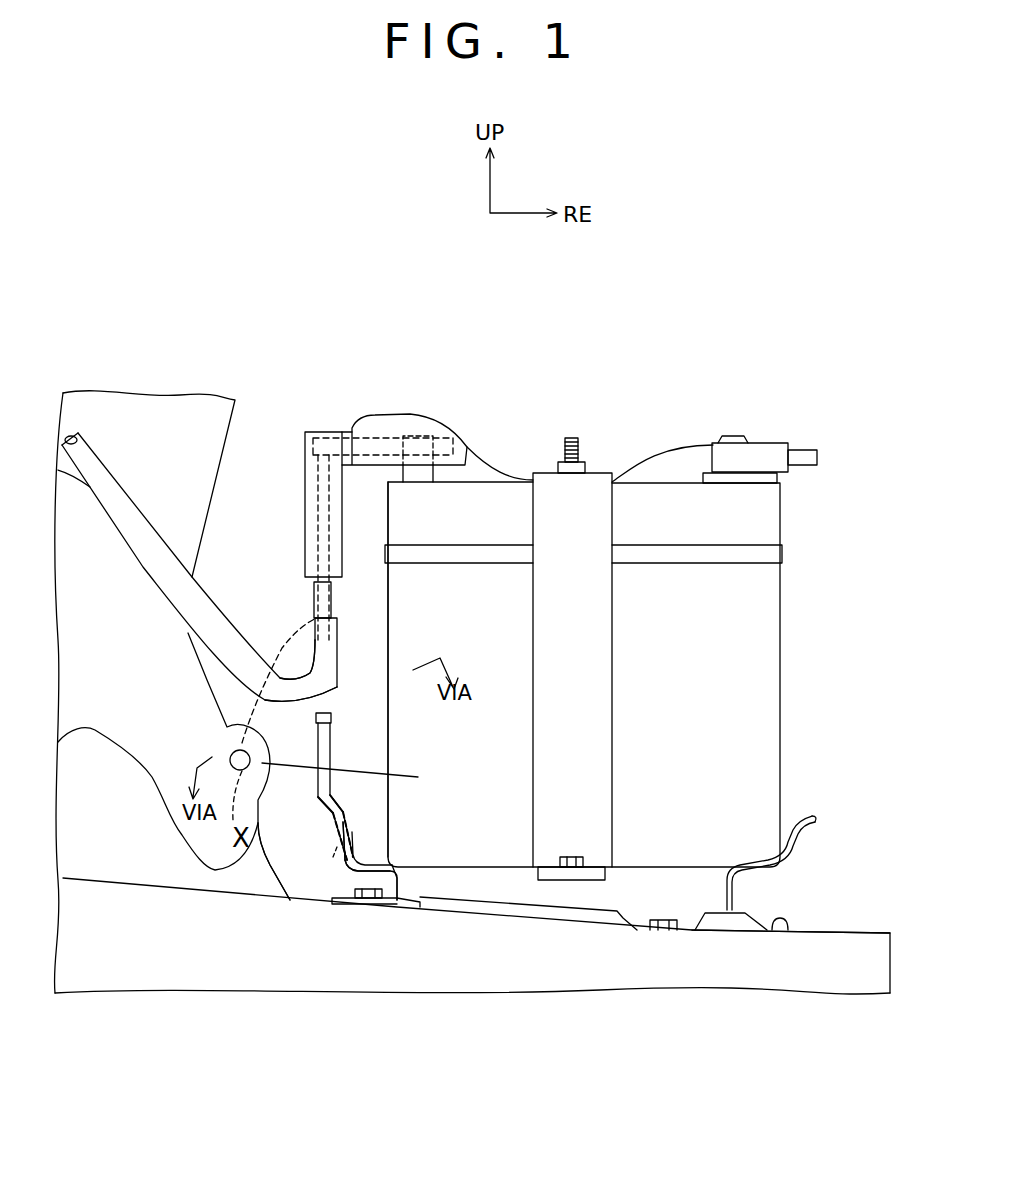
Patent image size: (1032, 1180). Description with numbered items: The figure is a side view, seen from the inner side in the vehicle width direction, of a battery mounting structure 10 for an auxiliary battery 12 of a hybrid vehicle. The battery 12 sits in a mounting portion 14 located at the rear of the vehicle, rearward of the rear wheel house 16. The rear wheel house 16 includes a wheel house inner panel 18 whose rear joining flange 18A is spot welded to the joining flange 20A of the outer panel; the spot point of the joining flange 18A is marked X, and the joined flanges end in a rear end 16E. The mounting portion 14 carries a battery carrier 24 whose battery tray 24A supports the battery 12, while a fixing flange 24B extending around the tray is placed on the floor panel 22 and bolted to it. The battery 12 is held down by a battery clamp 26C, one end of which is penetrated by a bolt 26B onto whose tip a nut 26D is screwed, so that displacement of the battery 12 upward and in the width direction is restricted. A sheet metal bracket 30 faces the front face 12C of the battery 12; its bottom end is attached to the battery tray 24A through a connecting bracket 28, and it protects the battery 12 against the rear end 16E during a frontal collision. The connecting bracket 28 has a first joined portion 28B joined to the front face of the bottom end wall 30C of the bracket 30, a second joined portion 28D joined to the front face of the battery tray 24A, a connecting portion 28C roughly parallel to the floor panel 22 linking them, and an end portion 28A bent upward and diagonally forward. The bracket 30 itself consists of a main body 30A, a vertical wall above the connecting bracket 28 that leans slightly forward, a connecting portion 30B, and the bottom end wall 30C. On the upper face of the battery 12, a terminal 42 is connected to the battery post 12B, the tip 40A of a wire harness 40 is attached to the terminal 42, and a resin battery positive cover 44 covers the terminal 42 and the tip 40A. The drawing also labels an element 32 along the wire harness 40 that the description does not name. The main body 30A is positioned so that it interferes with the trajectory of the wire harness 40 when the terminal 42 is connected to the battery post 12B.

The battery mounting structure 10 is at (681, 318).
The battery 12 is at (799, 625).
The battery post 12B is at (433, 447).
The front face 12C is at (388, 742).
The mounting portion 14 is at (848, 831).
The rear wheel house 16 is at (144, 540).
The rear end of the joining flanges 16E is at (275, 820).
The wheel house inner panel 18 is at (148, 602).
The joining flange 18A is at (262, 763).
The joining flange 20A is at (248, 590).
The floor panel 22 is at (837, 930).
The battery carrier 24 is at (702, 860).
The battery tray 24A is at (643, 866).
The fixing flange 24B is at (342, 907).
The bolt 26B is at (565, 445).
The battery clamp 26C is at (598, 687).
The nut 26D is at (588, 467).
The connecting bracket 28 is at (327, 886).
The end portion 28A is at (270, 812).
The first joined portion 28B is at (315, 851).
The connecting portion 28C is at (378, 850).
The second joined portion 28D is at (402, 882).
The bracket 30 is at (362, 755).
The main body 30A is at (312, 733).
The connecting portion 30B is at (328, 812).
The bottom end wall 30C is at (353, 828).
The connector 32 is at (317, 600).
The wire harness 40 is at (279, 599).
The tip of the wire harness 40A is at (312, 442).
The terminal 42 is at (420, 437).
The battery positive cover 44 is at (307, 493).